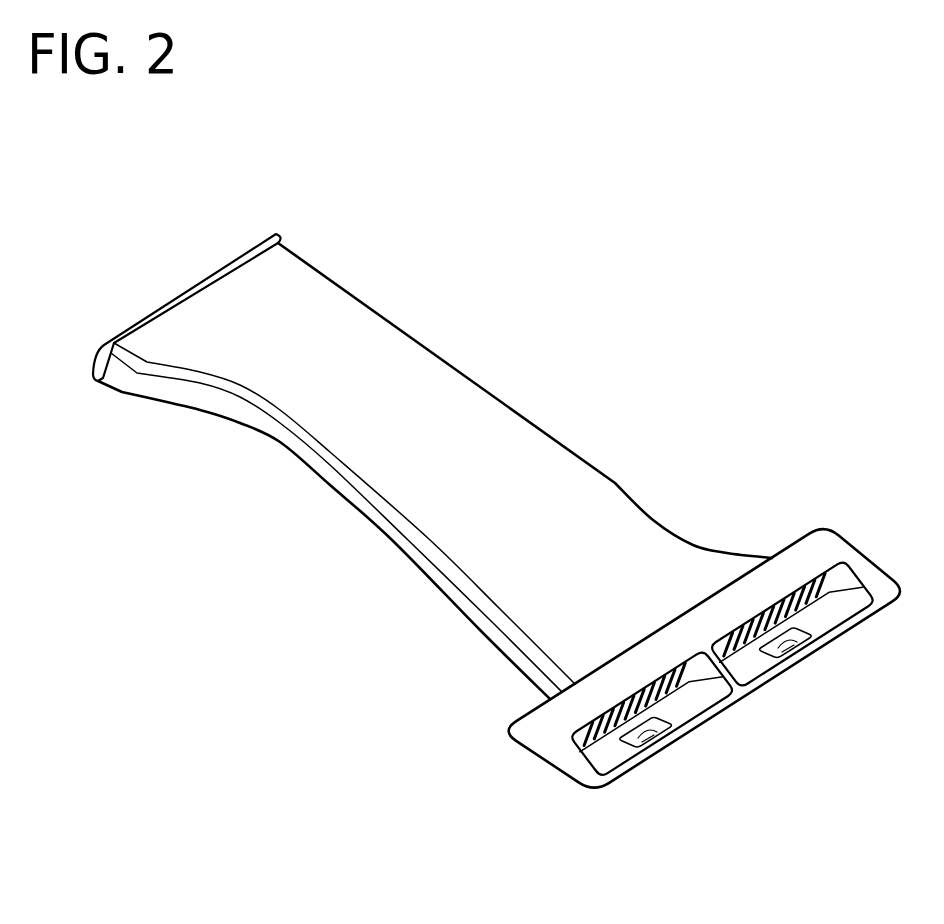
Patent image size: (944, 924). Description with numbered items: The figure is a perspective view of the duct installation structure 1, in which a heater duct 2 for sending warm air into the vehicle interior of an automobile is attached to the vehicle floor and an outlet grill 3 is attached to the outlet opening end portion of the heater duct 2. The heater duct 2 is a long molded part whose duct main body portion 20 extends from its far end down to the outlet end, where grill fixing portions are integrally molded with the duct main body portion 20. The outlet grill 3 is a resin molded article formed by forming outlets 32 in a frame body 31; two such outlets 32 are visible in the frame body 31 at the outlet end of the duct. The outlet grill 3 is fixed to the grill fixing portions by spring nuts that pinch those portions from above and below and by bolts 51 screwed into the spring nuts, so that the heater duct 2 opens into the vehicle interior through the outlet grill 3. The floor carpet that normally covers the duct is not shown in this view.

The duct installation structure 1 is at (521, 309).
The heater duct 2 is at (443, 495).
The duct main body portion 20 is at (353, 413).
The outlet grill 3 is at (667, 647).
The frame body 31 is at (597, 688).
The outlets 32 is at (610, 742).
The bolts 51 is at (655, 745).